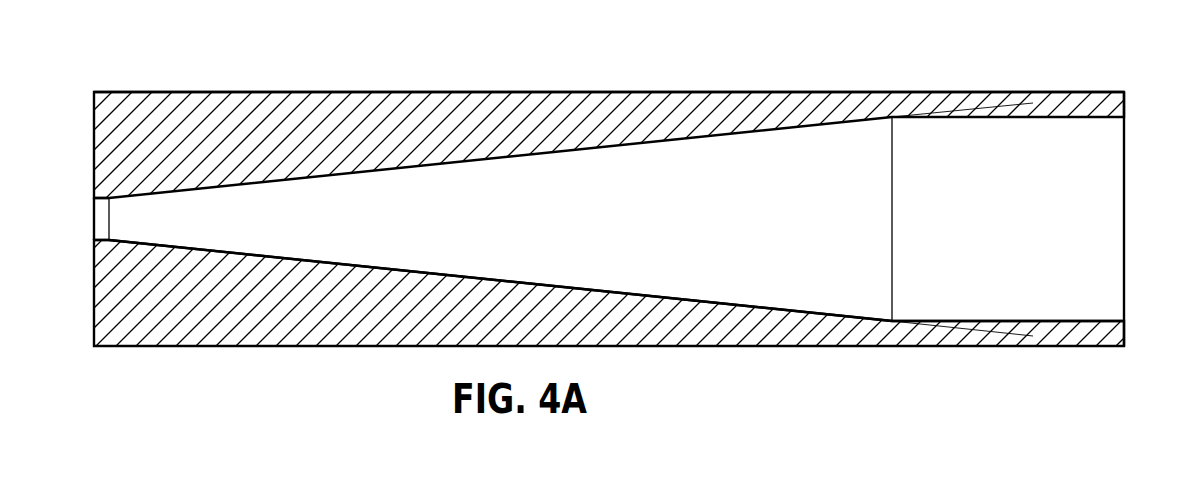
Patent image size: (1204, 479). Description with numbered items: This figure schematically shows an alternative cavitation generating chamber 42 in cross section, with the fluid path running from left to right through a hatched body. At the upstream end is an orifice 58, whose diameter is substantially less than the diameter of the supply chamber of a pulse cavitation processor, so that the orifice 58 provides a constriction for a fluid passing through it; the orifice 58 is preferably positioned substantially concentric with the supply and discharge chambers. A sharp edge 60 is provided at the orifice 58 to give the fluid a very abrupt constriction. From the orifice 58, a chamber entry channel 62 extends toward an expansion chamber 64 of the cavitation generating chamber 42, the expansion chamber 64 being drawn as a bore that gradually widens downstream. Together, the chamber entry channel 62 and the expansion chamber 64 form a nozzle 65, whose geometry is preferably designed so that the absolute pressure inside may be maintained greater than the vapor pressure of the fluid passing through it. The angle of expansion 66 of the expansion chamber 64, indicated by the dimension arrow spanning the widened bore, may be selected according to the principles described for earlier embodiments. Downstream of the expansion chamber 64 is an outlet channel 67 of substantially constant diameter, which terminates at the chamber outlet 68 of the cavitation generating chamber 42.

The cavitation generating chamber 42 is at (122, 48).
The orifice 58 is at (93, 220).
The sharp edge 60 is at (94, 238).
The chamber entry channel 62 is at (94, 202).
The expansion chamber 64 is at (463, 273).
The nozzle 65 is at (192, 110).
The angle of expansion 66 is at (1033, 103).
The outlet channel 67 is at (1067, 319).
The chamber outlet 68 is at (1124, 224).